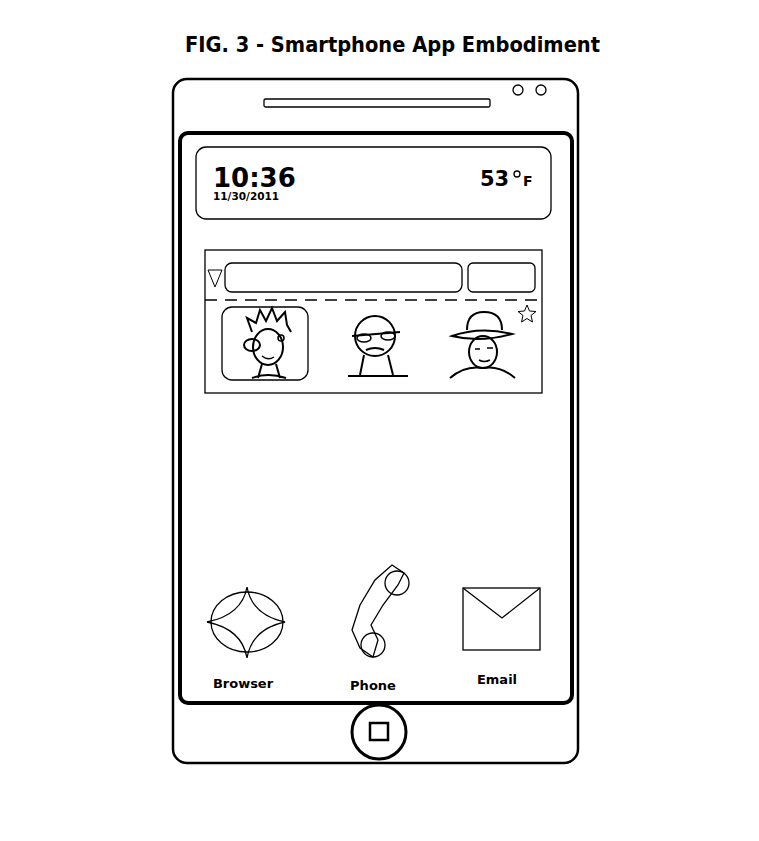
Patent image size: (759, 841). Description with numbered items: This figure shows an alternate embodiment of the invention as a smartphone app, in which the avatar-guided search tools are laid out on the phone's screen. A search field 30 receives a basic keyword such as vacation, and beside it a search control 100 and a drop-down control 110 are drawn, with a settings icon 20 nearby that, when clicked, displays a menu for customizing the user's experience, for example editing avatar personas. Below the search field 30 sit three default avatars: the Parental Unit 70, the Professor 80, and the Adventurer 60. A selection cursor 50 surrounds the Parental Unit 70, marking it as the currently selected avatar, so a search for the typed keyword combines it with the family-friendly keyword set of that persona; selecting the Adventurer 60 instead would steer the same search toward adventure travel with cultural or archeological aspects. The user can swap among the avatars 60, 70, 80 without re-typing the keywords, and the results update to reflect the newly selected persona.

The settings icon 20 is at (536, 315).
The search field 30 is at (272, 272).
The selection cursor 50 is at (227, 377).
The Adventurer avatar 60 is at (520, 370).
The Parental Unit avatar 70 is at (245, 342).
The Professor avatar 80 is at (347, 358).
The search button 100 is at (527, 270).
The drop-down indicator 110 is at (207, 277).